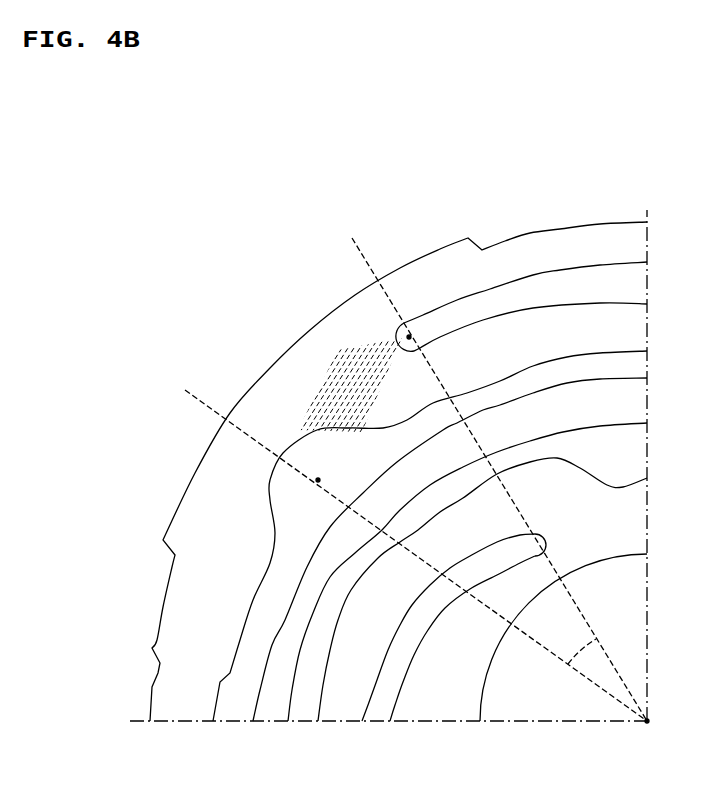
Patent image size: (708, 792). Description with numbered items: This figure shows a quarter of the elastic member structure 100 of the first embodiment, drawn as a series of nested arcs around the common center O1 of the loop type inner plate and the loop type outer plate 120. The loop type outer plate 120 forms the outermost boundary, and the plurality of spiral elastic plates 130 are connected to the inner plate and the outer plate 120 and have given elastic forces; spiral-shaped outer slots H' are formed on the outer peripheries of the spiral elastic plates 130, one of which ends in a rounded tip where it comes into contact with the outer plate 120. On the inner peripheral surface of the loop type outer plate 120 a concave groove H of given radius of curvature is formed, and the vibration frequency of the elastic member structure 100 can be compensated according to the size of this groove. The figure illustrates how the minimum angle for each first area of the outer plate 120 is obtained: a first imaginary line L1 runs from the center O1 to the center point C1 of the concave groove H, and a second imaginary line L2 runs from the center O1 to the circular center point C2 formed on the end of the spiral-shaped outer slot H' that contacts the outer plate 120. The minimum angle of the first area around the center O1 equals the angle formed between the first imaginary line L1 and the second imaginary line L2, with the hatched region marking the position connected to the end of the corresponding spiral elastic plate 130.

The elastic member structure 100 is at (405, 135).
The loop type outer plate 120 is at (190, 615).
The spiral elastic plate 130 is at (537, 325).
The concave groove H is at (391, 536).
The spiral-shaped outer slot H' is at (521, 275).
The first imaginary line L1 is at (400, 544).
The second imaginary line L2 is at (488, 466).
The center point of the concave groove C1 is at (331, 469).
The circular center point C2 is at (410, 316).
The center O1 is at (645, 736).